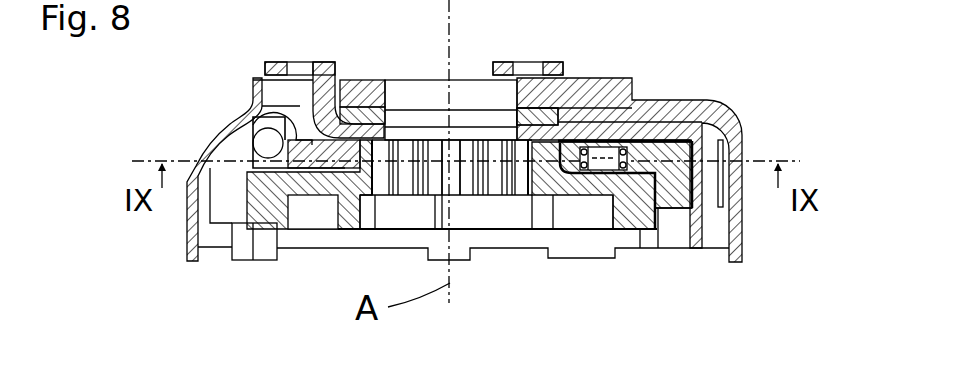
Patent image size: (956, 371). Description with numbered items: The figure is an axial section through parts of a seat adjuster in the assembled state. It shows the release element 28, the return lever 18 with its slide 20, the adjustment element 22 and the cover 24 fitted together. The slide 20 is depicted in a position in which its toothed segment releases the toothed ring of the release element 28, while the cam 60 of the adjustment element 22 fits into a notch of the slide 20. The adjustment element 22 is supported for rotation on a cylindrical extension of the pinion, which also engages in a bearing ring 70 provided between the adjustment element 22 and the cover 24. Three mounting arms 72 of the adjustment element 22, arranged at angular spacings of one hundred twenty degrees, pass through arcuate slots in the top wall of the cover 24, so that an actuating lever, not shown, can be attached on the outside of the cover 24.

The return lever 18 is at (245, 142).
The slide 20 is at (670, 205).
The adjustment element 22 is at (404, 122).
The cover 24 is at (655, 96).
The release element 28 is at (623, 236).
The cam 60 is at (703, 222).
The bearing ring 70 is at (366, 112).
The mounting arms 72 is at (272, 62).